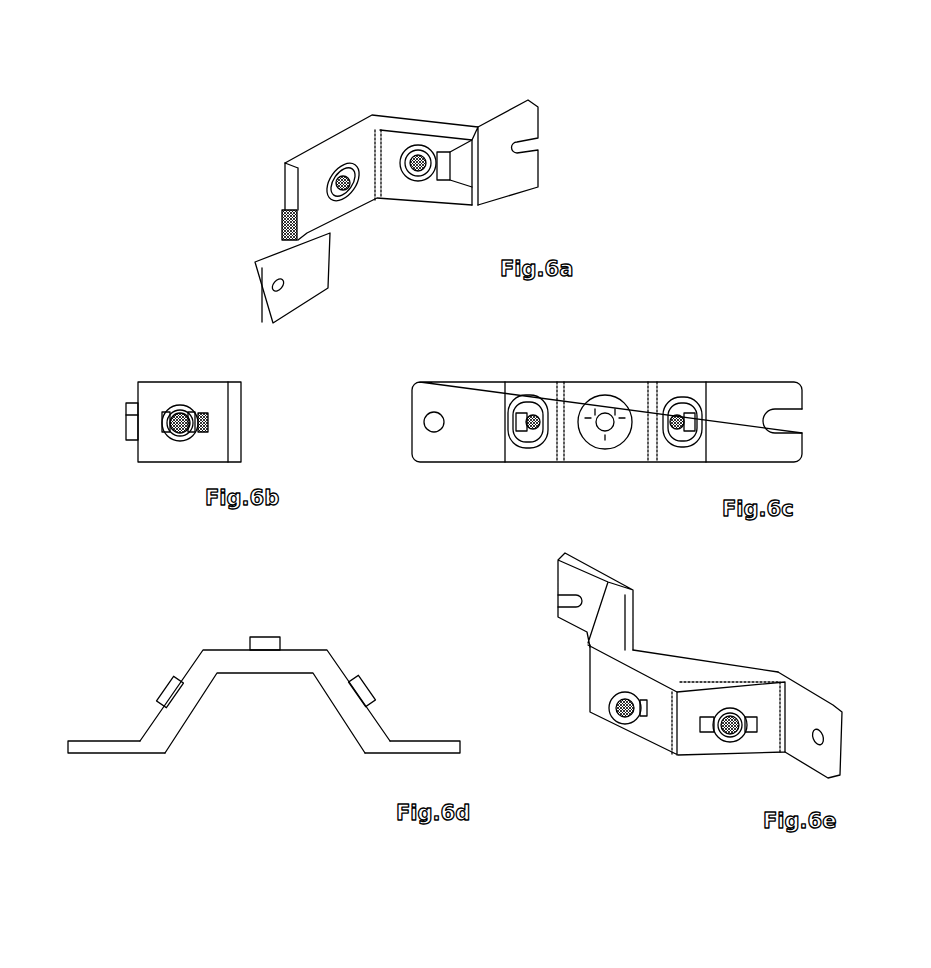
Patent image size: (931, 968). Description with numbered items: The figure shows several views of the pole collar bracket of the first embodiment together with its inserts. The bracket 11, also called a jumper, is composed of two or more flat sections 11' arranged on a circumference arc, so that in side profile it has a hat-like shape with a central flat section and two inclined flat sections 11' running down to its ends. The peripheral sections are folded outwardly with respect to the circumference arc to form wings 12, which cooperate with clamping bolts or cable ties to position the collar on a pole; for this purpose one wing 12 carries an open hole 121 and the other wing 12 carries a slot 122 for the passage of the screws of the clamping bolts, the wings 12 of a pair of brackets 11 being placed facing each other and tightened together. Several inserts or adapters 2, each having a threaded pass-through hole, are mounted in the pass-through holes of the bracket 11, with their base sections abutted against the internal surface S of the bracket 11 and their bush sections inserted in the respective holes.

In FIG. 6A, the insert or adapter 2 is at (418, 158).
In FIG. 6B, the insert or adapter 2 is at (126, 432).
In FIG. 6C, the insert or adapter 2 is at (682, 408).
In FIG. 6D, the insert or adapter 2 is at (160, 690).
In FIG. 6E, the insert or adapter 2 is at (727, 717).
In FIG. 6B, the bracket 11 is at (148, 359).
In FIG. 6E, the bracket 11 is at (686, 802).
In FIG. 6D, the flat sections 11' is at (265, 782).
In FIG. 6A, the wings 12 is at (505, 168).
In FIG. 6C, the wings 12 is at (480, 435).
In FIG. 6D, the wings 12 is at (418, 741).
In FIG. 6E, the wings 12 is at (573, 617).
In FIG. 6C, the open hole 121 is at (432, 424).
In FIG. 6C, the slot 122 is at (785, 418).
In FIG. 6A, the internal surface S is at (392, 183).